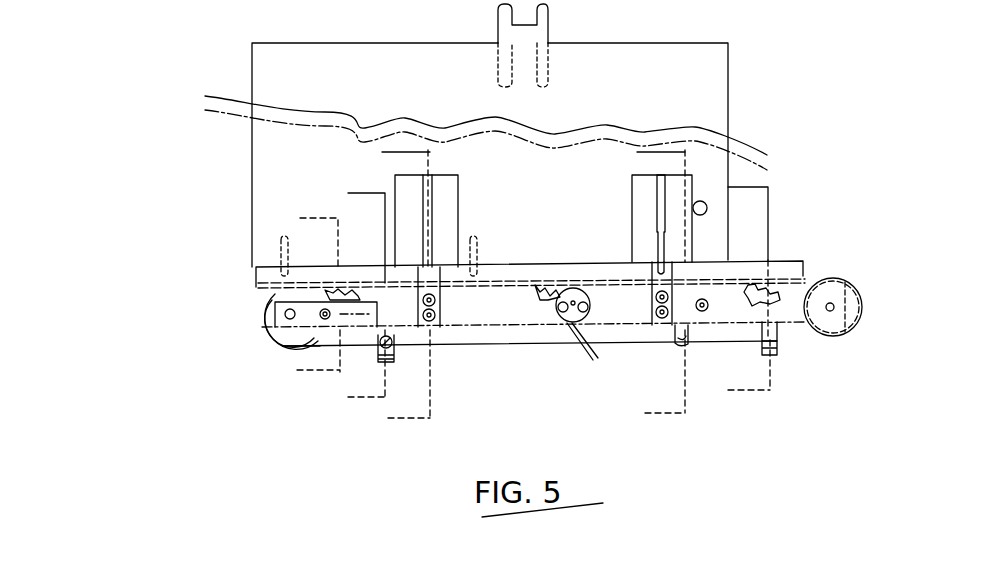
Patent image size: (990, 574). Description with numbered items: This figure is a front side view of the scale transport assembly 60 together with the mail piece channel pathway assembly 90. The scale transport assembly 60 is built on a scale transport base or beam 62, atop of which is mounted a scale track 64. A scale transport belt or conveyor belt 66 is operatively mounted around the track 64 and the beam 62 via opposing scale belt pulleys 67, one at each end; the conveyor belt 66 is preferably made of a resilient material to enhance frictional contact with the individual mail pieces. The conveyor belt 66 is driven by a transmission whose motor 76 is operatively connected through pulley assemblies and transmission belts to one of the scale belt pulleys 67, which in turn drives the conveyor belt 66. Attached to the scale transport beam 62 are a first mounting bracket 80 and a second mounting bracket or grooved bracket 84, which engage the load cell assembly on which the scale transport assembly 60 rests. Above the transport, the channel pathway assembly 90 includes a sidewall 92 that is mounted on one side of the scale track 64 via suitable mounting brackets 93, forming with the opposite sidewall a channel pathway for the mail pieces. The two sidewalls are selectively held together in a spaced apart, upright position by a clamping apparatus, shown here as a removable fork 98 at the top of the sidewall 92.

The scale transport assembly 60 is at (217, 304).
The scale transport beam 62 is at (788, 310).
The scale track 64 is at (785, 255).
The conveyor belt 66 is at (323, 348).
The scale belt pulley 67 is at (267, 338).
The motor 76 is at (566, 323).
The first mounting bracket 80 is at (387, 363).
The second mounting bracket 84 is at (775, 357).
The channel pathway assembly 90 is at (218, 195).
The sidewall 92 is at (708, 90).
The mounting bracket 93 is at (637, 208).
The removable fork 98 is at (550, 26).